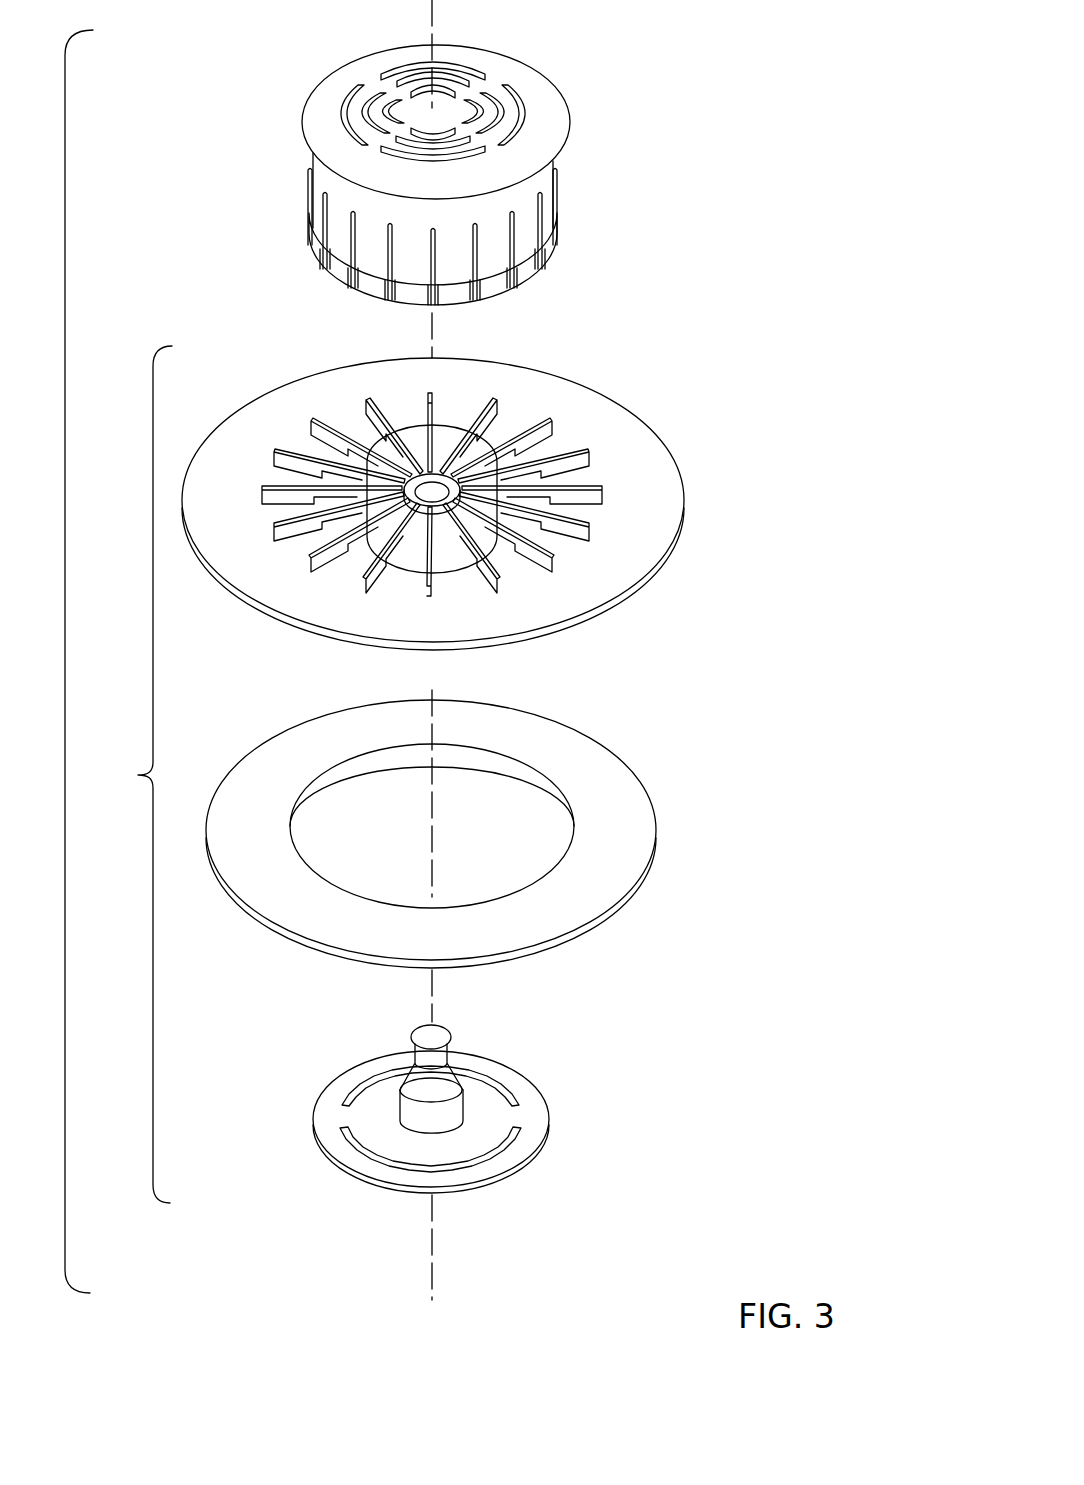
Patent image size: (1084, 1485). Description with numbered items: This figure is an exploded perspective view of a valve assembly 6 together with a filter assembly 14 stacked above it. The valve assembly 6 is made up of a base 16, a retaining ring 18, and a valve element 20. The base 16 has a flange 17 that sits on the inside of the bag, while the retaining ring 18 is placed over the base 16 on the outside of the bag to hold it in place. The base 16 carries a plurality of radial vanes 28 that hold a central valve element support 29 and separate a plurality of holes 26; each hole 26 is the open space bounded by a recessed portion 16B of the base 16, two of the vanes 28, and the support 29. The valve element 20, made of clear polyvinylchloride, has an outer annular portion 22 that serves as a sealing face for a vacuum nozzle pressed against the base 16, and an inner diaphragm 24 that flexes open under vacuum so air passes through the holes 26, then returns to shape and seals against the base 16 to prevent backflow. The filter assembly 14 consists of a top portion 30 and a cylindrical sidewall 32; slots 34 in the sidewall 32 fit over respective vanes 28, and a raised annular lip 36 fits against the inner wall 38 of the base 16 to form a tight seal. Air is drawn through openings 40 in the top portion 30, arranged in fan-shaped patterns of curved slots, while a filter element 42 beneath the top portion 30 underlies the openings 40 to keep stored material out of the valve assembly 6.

The valve assembly 6 is at (455, 782).
The filter assembly 14 is at (226, 149).
The base 16 is at (700, 426).
The recessed portion 16B is at (453, 572).
The flange 17 is at (596, 405).
The retaining ring 18 is at (683, 788).
The valve element 20 is at (597, 1082).
The outer annular portion 22 is at (470, 1176).
The inner diaphragm 24 is at (487, 1122).
The holes 26 is at (440, 538).
The radial vanes 28 is at (497, 537).
The valve element support 29 is at (430, 466).
The top portion 30 is at (503, 67).
The cylindrical sidewall 32 is at (497, 237).
The slots 34 is at (478, 254).
The raised annular lip 36 is at (512, 274).
The inner wall 38 is at (442, 433).
The openings 40 is at (506, 108).
The filter element 42 is at (382, 104).